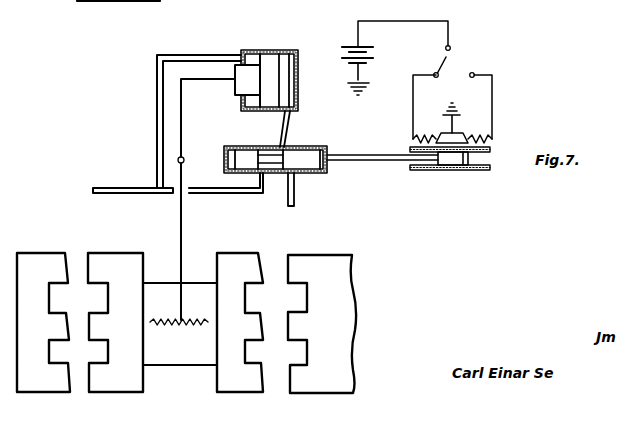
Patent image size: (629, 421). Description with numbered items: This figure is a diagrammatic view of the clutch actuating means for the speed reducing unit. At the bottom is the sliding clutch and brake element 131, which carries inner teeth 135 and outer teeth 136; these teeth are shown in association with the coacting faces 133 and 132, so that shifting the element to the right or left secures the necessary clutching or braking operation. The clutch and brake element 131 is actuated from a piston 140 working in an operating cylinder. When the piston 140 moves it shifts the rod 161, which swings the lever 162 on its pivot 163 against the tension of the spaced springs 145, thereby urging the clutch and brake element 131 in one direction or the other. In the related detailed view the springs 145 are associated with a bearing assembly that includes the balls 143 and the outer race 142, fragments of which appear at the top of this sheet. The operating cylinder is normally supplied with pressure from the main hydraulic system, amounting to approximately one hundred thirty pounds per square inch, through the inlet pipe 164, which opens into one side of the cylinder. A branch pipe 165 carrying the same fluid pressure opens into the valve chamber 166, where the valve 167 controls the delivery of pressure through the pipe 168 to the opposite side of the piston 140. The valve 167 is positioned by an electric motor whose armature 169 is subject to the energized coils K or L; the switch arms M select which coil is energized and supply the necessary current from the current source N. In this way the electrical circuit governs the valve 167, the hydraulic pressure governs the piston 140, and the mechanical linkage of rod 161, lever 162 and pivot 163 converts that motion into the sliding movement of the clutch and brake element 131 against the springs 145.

The sliding clutch and brake element 131 is at (187, 360).
The coacting face 132 is at (302, 382).
The coacting face 133 is at (60, 383).
The inner teeth 135 is at (101, 386).
The outer teeth 136 is at (253, 384).
The piston 140 is at (279, 60).
The outer race 142 is at (148, 1).
The balls 143 is at (105, 1).
The spaced springs 145 is at (163, 316).
The rod 161 is at (211, 81).
The lever 162 is at (183, 120).
The pivot 163 is at (184, 159).
The inlet pipe 164 is at (157, 112).
The branch pipe 165 is at (228, 194).
The valve chamber 166 is at (300, 146).
The valve 167 is at (312, 162).
The pipe 168 is at (289, 125).
The armature 169 is at (458, 170).
The coil K is at (413, 132).
The coil L is at (492, 132).
The switch arms M is at (453, 61).
The current source N is at (374, 36).